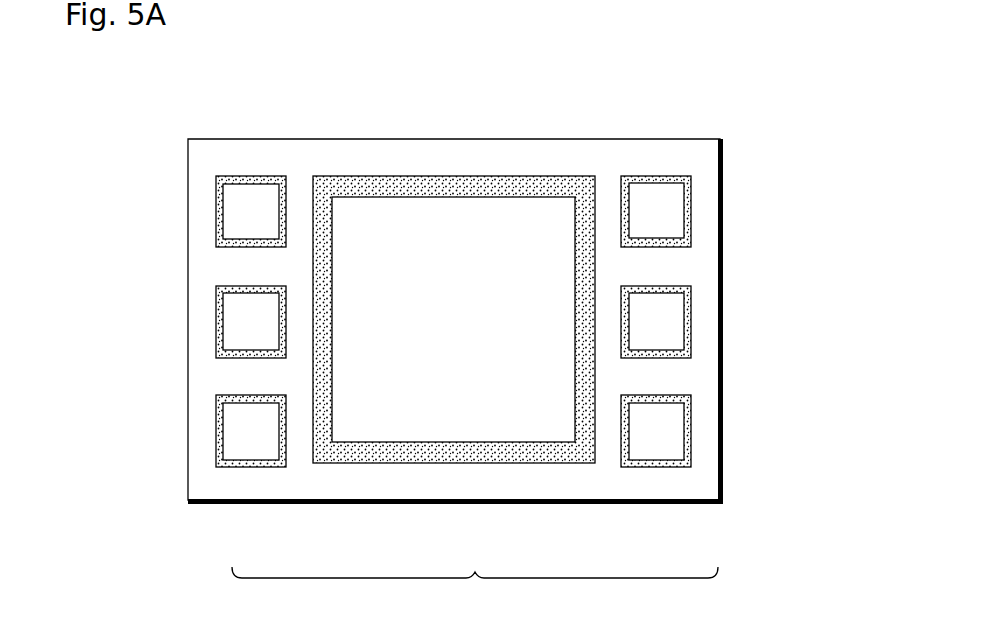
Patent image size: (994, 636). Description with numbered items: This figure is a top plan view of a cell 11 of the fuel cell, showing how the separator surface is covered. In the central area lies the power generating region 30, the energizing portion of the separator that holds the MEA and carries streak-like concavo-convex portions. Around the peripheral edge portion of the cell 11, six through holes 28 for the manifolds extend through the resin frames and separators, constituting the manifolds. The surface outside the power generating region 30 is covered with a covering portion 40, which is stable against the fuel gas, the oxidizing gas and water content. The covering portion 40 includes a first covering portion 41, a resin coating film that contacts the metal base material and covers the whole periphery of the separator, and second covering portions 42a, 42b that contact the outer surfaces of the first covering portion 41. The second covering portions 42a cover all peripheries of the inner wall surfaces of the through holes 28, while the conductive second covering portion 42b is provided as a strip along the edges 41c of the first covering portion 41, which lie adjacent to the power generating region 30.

The cell 11 is at (617, 120).
The through hole for manifold 28 is at (223, 228).
The power generating region 30 is at (397, 213).
The covering portion 40 is at (475, 588).
The first covering portion 41 is at (567, 482).
The edge of first covering portion 41c is at (481, 185).
The second covering portion 42a is at (217, 203).
The second covering portion 42b is at (468, 463).